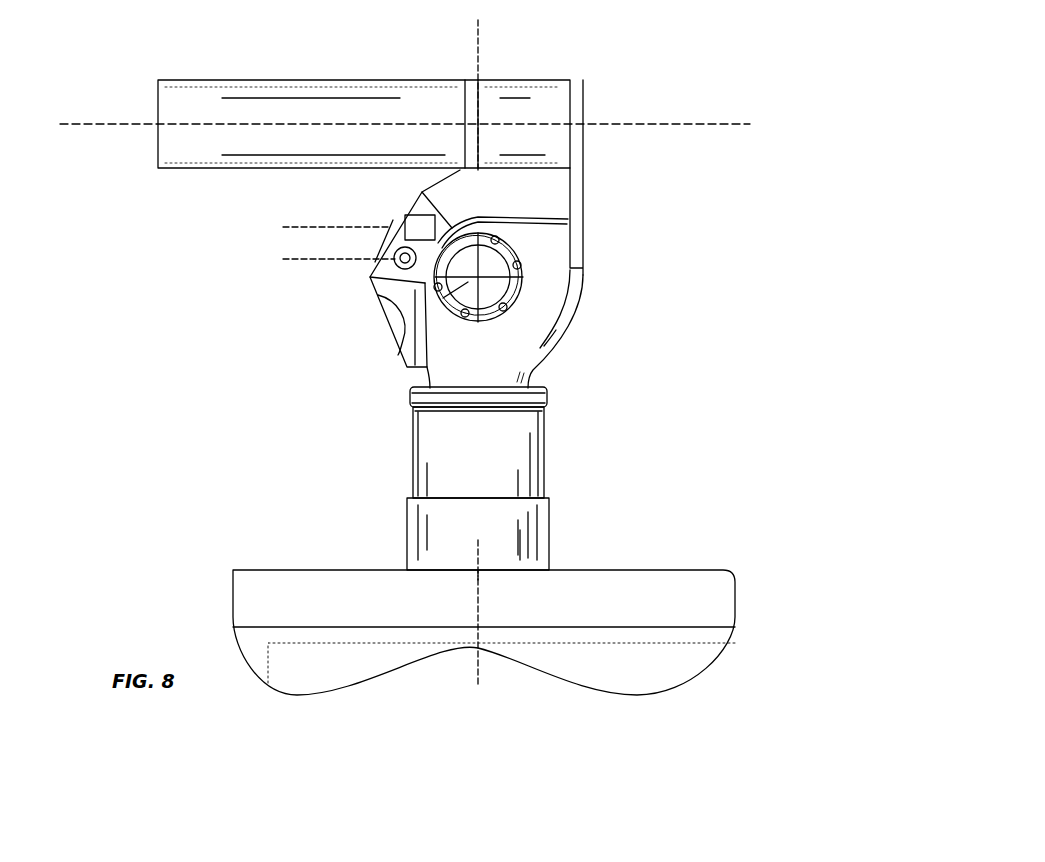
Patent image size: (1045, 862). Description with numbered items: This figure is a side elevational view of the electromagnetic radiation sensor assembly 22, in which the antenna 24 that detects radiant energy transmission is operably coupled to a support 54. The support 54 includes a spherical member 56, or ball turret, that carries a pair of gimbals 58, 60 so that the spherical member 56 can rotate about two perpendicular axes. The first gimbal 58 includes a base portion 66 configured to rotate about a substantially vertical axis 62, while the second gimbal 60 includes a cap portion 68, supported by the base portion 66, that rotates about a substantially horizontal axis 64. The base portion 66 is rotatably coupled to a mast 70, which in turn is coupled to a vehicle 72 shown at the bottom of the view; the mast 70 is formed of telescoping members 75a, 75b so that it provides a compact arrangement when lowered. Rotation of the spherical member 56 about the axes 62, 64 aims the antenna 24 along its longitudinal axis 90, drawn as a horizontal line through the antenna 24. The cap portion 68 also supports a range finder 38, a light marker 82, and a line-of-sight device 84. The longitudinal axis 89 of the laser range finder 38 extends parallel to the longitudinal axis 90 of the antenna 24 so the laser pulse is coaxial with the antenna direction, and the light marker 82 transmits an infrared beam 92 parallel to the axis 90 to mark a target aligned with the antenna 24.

The electromagnetic radiation sensor assembly 22 is at (640, 82).
The antenna 24 is at (230, 157).
The range finder 38 is at (377, 235).
The support 54 is at (583, 443).
The spherical member 56 is at (582, 322).
The gimbal 58 is at (582, 288).
The gimbal 60 is at (377, 293).
The vertical axis 62 is at (480, 45).
The horizontal axis 64 is at (410, 368).
The base portion 66 is at (538, 343).
The cap portion 68 is at (367, 270).
The mast 70 is at (548, 524).
The vehicle 72 is at (687, 583).
The telescoping member 75a is at (418, 433).
The telescoping member 75b is at (548, 555).
The light marker 82 is at (406, 212).
The line-of-sight device 84 is at (387, 323).
The longitudinal axis 89 is at (295, 260).
The longitudinal axis 90 is at (683, 123).
The infrared beam 92 is at (308, 227).